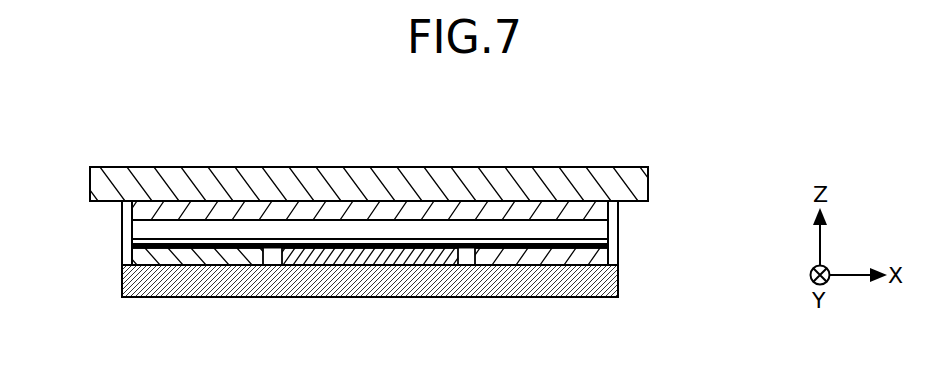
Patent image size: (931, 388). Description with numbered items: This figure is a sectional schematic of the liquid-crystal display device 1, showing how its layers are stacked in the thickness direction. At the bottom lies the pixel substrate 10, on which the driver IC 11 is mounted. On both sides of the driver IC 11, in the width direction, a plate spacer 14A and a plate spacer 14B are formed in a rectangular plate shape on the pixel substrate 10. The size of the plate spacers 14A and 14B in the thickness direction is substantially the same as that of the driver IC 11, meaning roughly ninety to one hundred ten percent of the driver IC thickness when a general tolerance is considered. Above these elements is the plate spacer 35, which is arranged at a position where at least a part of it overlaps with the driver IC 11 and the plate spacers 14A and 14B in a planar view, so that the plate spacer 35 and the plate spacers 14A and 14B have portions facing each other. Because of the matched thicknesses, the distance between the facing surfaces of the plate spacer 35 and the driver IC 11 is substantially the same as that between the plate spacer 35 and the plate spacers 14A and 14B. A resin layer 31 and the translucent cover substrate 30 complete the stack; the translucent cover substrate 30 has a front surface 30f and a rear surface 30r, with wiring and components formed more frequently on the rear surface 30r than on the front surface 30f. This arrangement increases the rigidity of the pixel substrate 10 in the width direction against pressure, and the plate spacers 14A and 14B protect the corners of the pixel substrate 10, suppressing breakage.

The liquid-crystal display device 1 is at (54, 149).
The pixel substrate 10 is at (342, 290).
The driver IC 11 is at (420, 262).
The plate spacer 14A is at (230, 262).
The plate spacer 14B is at (570, 262).
The translucent cover substrate 30 is at (456, 180).
The front surface 30f is at (637, 165).
The rear surface 30r is at (636, 201).
The resin layer 31 is at (595, 230).
The plate spacer 35 is at (370, 213).